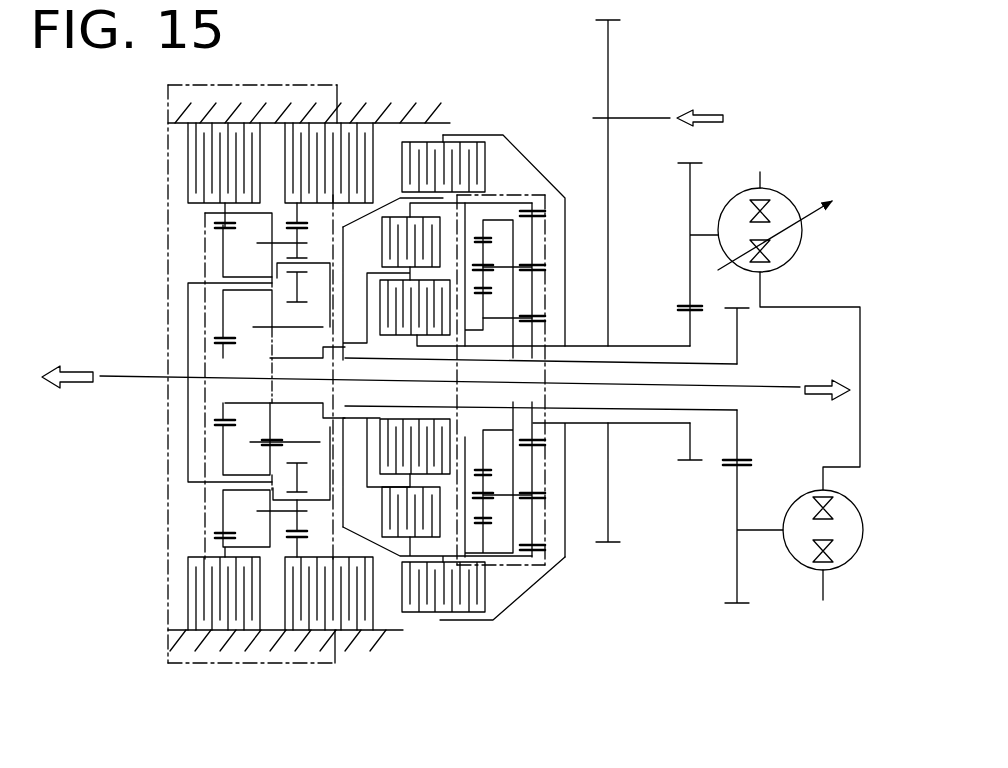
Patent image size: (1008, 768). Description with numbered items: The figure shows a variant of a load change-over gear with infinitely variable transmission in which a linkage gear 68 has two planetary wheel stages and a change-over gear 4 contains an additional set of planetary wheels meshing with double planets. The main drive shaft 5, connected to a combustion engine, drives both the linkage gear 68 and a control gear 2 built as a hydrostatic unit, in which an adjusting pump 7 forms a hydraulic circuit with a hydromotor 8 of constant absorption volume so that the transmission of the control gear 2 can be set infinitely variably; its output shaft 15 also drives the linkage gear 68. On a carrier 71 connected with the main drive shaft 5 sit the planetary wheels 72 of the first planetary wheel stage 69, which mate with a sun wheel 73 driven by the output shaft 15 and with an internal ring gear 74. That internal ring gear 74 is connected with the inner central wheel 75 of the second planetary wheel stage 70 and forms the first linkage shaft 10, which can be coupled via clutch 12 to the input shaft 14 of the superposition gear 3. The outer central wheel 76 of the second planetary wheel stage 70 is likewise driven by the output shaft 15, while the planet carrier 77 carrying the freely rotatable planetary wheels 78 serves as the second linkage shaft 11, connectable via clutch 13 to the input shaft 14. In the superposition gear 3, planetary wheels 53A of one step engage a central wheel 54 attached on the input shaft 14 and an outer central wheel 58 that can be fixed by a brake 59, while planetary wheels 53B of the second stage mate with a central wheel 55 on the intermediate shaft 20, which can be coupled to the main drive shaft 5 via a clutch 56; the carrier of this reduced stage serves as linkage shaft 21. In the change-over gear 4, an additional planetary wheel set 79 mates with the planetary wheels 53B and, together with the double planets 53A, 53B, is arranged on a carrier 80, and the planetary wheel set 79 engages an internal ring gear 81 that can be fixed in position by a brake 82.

The control gear 2 is at (815, 282).
The superposition gear 3 is at (196, 241).
The change-over gear 4 is at (160, 290).
The main drive shaft 5 is at (675, 346).
The adjusting pump 7 is at (780, 210).
The hydromotor 8 is at (802, 523).
The first linkage shaft 10 is at (478, 623).
The second linkage shaft 11 is at (483, 428).
The clutch 12 is at (405, 518).
The clutch 13 is at (397, 450).
The input shaft 14 is at (270, 358).
The output shaft 15 is at (752, 533).
The intermediate shaft 20 is at (325, 327).
The linkage shaft 21 is at (167, 431).
The planetary wheels 53A is at (228, 512).
The planetary wheels 53B is at (258, 510).
The central wheel 54 is at (223, 412).
The central wheel 55 is at (265, 437).
The clutch 56 is at (417, 148).
The outer central wheel 58 is at (225, 547).
The brake 59 is at (217, 158).
The linkage gear 68 is at (556, 215).
The first planetary wheel stage 69 is at (532, 180).
The second planetary wheel stage 70 is at (497, 178).
The carrier 71 is at (552, 267).
The planetary wheels 72 is at (537, 525).
The sun wheel 73 is at (570, 428).
The internal ring gear 74 is at (540, 525).
The inner central wheel 75 is at (608, 337).
The outer central wheel 76 is at (488, 530).
The planet carrier 77 is at (485, 507).
The planetary wheels 78 is at (537, 318).
The planetary wheel set 79 is at (303, 500).
The carrier 80 is at (273, 482).
The internal ring gear 81 is at (293, 215).
The brake 82 is at (310, 145).